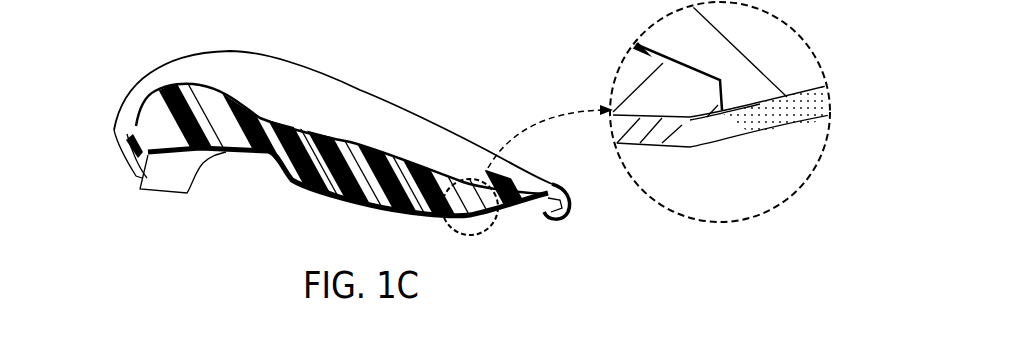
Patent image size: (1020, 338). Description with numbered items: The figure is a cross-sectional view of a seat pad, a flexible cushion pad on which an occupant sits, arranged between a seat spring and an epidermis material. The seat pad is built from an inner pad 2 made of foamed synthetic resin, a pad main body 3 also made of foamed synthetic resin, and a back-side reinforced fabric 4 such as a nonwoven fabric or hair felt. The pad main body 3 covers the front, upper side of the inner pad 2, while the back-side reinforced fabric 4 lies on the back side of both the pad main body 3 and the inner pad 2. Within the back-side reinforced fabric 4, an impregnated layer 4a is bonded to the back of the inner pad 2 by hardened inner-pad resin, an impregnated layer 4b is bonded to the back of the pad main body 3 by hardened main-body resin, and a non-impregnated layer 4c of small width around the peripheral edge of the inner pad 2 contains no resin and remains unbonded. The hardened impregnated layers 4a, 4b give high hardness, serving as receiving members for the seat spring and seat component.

The back-side reinforced fabric 4 is at (127, 211).
The inner pad 2 is at (407, 200).
The pad main body 3 is at (355, 137).
The impregnated layer 4a is at (330, 195).
The impregnated layer 4b is at (189, 193).
The non-impregnated layer 4c is at (277, 164).